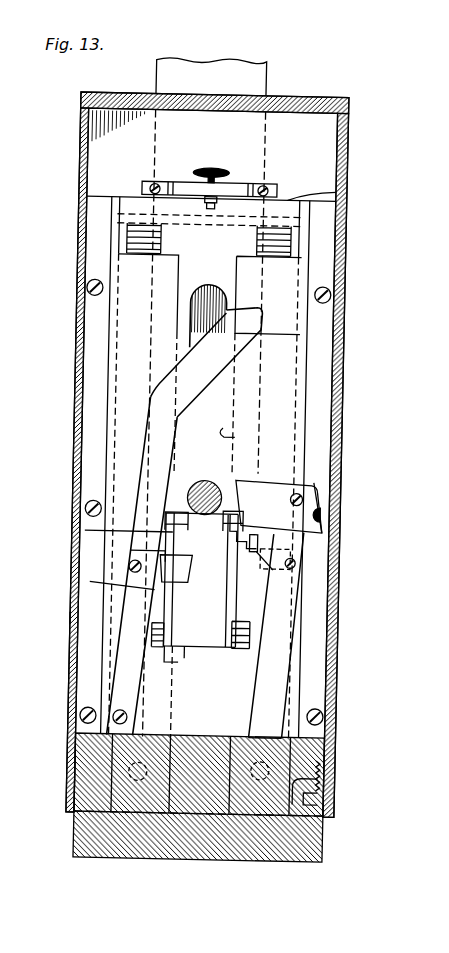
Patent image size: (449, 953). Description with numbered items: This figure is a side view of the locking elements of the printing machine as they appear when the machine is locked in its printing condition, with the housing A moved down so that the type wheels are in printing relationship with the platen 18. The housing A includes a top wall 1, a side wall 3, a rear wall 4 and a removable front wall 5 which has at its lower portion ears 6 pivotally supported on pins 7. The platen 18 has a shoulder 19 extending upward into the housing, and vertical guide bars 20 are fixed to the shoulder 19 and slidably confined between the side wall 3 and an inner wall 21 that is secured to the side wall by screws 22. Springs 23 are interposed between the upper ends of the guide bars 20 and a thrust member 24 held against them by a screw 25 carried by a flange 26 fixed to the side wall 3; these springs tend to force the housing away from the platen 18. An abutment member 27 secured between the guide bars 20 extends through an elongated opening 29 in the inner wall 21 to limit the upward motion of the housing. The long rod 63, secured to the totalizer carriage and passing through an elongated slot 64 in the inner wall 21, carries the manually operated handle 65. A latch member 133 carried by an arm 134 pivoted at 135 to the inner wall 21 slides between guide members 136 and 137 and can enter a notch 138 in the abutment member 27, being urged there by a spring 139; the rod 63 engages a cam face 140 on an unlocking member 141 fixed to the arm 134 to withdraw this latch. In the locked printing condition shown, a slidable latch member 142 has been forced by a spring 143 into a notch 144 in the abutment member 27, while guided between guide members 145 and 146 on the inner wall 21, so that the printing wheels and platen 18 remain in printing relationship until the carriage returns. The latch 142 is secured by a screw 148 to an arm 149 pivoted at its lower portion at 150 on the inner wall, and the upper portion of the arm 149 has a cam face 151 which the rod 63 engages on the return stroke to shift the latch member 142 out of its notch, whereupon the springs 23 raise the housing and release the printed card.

The top wall 1 is at (318, 93).
The side wall 3 is at (318, 131).
The rear wall 4 is at (81, 440).
The removable front wall 5 is at (349, 415).
The ears 6 is at (340, 764).
The pins 7 is at (340, 790).
The platen 18 is at (135, 858).
The shoulder 19 is at (89, 772).
The guide bars 20 is at (185, 785).
The inner wall 21 is at (312, 370).
The screws 22 is at (90, 289).
The springs 23 is at (129, 234).
The thrust member 24 is at (340, 194).
The screw 25 is at (216, 168).
The flange 26 is at (262, 182).
The abutment member 27 is at (186, 656).
The elongated opening 29 is at (207, 654).
The long rod 63 is at (214, 478).
The elongated slot 64 is at (228, 482).
The manually operated handle 65 is at (222, 60).
The latch member 133 is at (275, 572).
The arm 134 is at (290, 645).
The pivot 135 is at (318, 697).
The guide member 136 is at (314, 540).
The guide member 137 is at (229, 581).
The notch 138 is at (272, 488).
The spring 139 is at (280, 578).
The cam face 140 is at (248, 477).
The unlocking member 141 is at (323, 479).
The slidable latch member 142 is at (200, 568).
The spring 143 is at (165, 620).
The notch 144 is at (94, 528).
The guide member 145 is at (140, 549).
The guide member 146 is at (100, 582).
The screw 148 is at (139, 566).
The arm 149 is at (130, 652).
The pivot 150 is at (142, 713).
The cam face 151 is at (222, 372).
The housing A is at (81, 618).